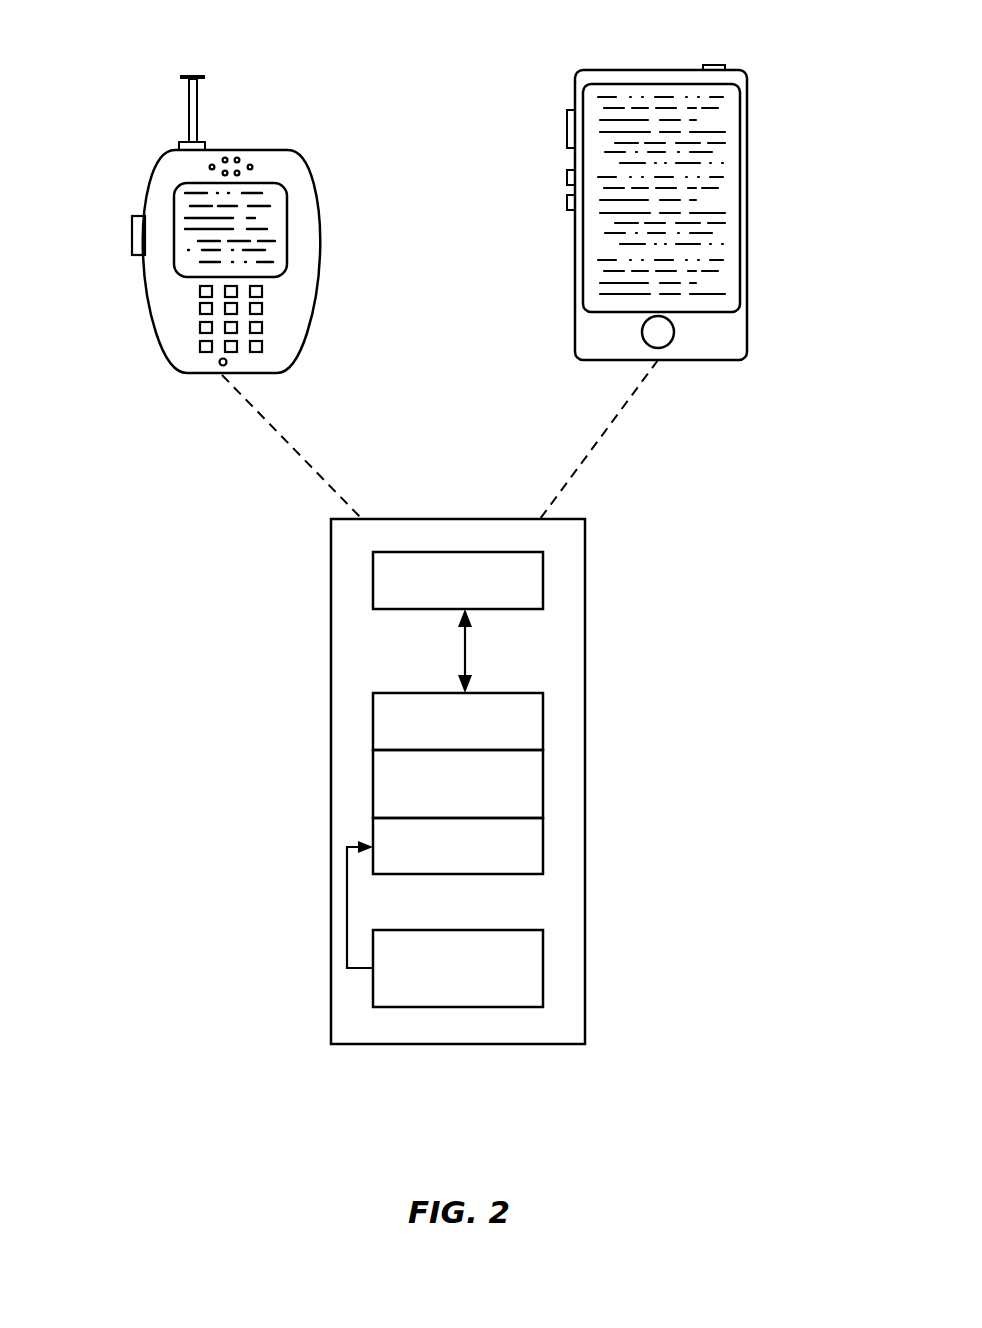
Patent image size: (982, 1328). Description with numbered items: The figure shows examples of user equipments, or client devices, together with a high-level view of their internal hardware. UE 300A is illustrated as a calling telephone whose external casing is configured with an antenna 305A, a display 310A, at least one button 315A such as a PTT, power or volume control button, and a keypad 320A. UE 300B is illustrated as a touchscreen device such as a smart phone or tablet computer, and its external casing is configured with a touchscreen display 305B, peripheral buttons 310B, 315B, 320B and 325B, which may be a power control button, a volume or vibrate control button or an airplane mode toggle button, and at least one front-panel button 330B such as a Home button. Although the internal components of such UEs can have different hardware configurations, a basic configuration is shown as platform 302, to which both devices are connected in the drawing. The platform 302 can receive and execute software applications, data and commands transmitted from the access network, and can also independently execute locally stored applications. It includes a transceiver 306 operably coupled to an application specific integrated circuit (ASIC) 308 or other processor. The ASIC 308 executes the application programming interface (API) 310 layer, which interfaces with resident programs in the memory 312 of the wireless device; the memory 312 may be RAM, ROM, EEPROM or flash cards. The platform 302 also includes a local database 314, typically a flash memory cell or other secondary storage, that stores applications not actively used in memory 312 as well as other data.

The UE 300A is at (294, 353).
The antenna 305A is at (198, 99).
The display 310A is at (288, 228).
The button 315A is at (131, 237).
The keypad 320A is at (262, 308).
The UE 300B is at (620, 70).
The touchscreen display 305B is at (748, 108).
The peripheral button 310B is at (714, 66).
The peripheral button 315B is at (567, 132).
The peripheral button 320B is at (567, 178).
The peripheral button 325B is at (567, 201).
The front-panel button 330B is at (642, 332).
The platform 302 is at (331, 628).
The transceiver 306 is at (543, 576).
The application specific integrated circuit (ASIC) 308 is at (543, 721).
The application programming interface (API) 310 is at (543, 782).
The memory 312 is at (543, 845).
The local database 314 is at (543, 967).